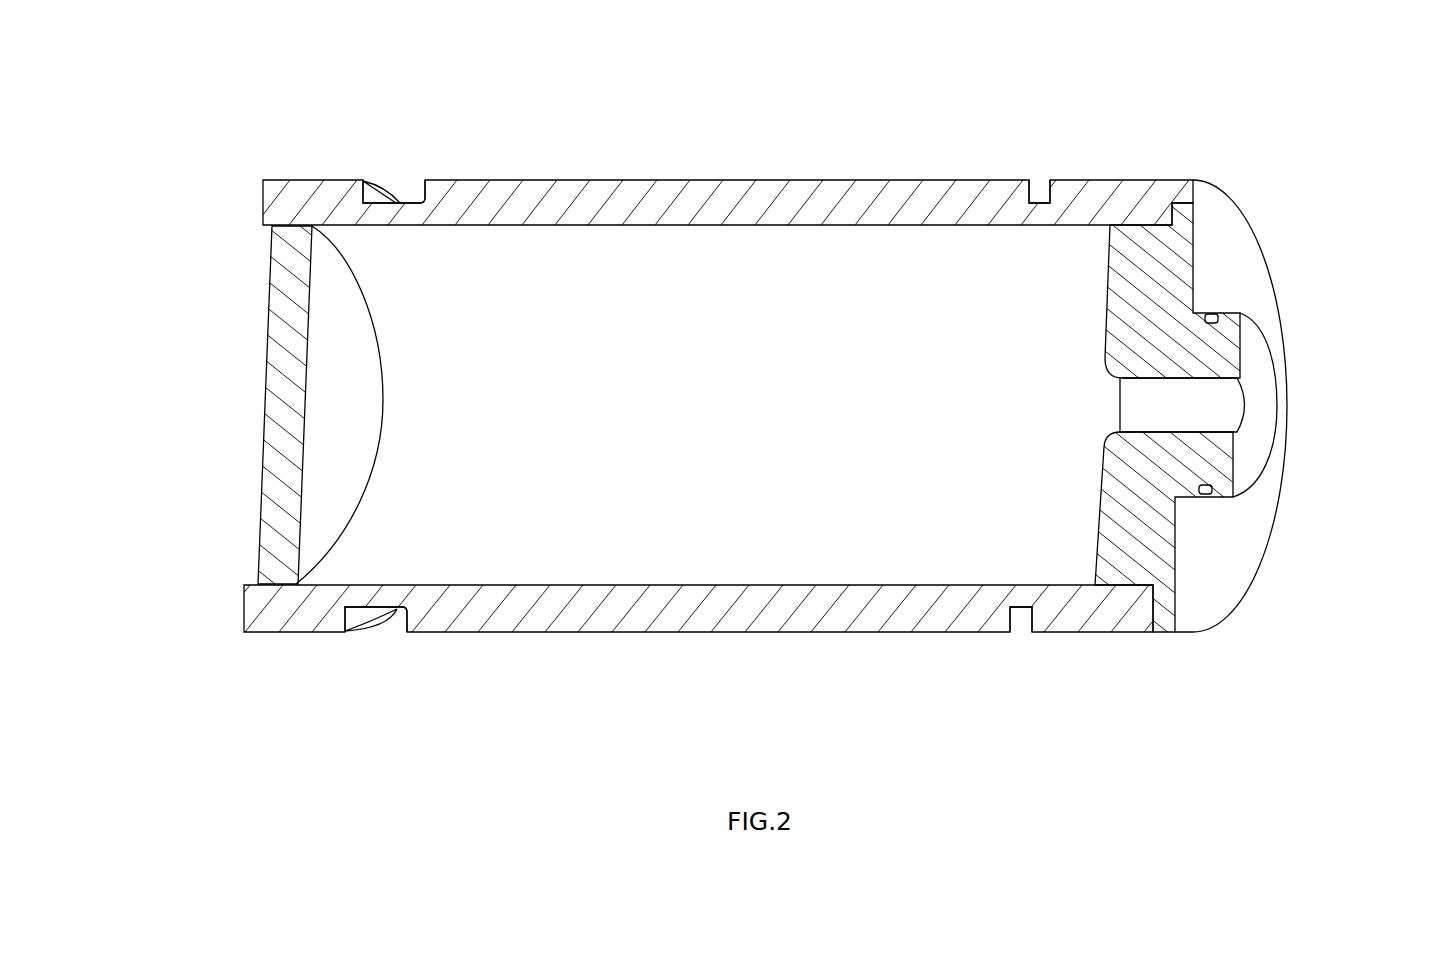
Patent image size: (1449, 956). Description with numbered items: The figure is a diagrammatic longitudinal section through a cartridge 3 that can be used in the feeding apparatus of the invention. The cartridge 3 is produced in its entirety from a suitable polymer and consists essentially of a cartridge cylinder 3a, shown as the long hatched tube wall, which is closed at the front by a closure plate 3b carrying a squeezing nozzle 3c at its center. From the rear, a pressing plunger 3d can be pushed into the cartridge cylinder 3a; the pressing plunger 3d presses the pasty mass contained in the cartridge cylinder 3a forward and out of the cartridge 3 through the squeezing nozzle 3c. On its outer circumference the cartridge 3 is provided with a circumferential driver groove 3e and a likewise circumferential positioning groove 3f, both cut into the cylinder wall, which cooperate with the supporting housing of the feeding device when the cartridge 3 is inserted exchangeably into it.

The cartridge 3 is at (1205, 140).
The cartridge cylinder 3a is at (733, 203).
The closure plate 3b is at (1217, 270).
The squeezing nozzle 3c is at (1243, 405).
The pressing plunger 3d is at (265, 403).
The driver groove 3e is at (400, 193).
The positioning groove 3f is at (1040, 192).